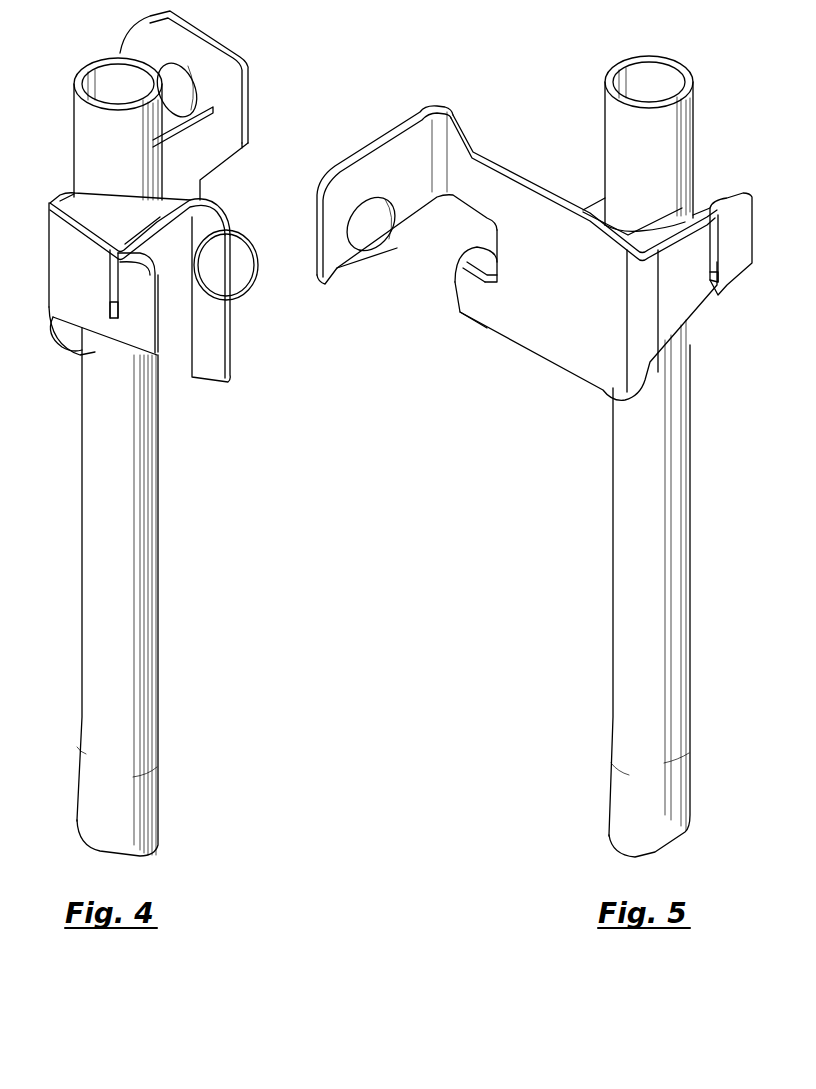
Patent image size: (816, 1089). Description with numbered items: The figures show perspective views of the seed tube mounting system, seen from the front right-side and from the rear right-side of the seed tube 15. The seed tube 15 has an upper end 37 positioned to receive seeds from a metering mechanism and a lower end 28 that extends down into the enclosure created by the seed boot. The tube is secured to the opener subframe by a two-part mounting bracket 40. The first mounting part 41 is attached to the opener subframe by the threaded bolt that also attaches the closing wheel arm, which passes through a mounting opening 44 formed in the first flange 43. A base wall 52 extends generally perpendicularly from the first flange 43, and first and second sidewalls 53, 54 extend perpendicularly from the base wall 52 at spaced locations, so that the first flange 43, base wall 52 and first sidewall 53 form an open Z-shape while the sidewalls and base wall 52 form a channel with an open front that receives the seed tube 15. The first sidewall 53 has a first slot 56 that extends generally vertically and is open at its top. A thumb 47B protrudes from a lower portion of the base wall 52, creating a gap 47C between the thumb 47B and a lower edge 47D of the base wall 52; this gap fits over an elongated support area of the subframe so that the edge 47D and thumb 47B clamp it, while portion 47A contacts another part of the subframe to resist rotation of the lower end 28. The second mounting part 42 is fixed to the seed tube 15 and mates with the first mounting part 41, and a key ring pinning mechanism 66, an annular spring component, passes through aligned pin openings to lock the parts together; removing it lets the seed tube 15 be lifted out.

In FIG. 4, the seed tube 15 is at (132, 540).
In FIG. 5, the seed tube 15 is at (622, 542).
In FIG. 4, the lower end 28 is at (140, 810).
In FIG. 5, the lower end 28 is at (620, 815).
In FIG. 4, the upper end 37 is at (95, 115).
In FIG. 5, the upper end 37 is at (668, 122).
In FIG. 4, the mounting bracket 40 is at (238, 188).
In FIG. 5, the mounting bracket 40 is at (752, 185).
In FIG. 4, the first mounting part 41 is at (73, 302).
In FIG. 5, the first mounting part 41 is at (530, 222).
In FIG. 4, the second mounting part 42 is at (165, 300).
In FIG. 5, the second mounting part 42 is at (700, 188).
In FIG. 4, the first flange 43 is at (213, 57).
In FIG. 5, the first flange 43 is at (337, 267).
In FIG. 4, the mounting opening 44 is at (175, 88).
In FIG. 5, the mounting opening 44 is at (372, 240).
In FIG. 5, the portion 47A is at (482, 330).
In FIG. 5, the thumb 47B is at (458, 290).
In FIG. 5, the gap 47C is at (455, 262).
In FIG. 5, the lower edge 47D is at (460, 195).
In FIG. 4, the base wall 52 is at (212, 143).
In FIG. 5, the base wall 52 is at (588, 345).
In FIG. 4, the first sidewall 53 is at (75, 258).
In FIG. 5, the first sidewall 53 is at (735, 262).
In FIG. 4, the second sidewall 54 is at (207, 328).
In FIG. 4, the first slot 56 is at (113, 318).
In FIG. 5, the first slot 56 is at (713, 282).
In FIG. 4, the key ring pinning mechanism 66 is at (256, 288).